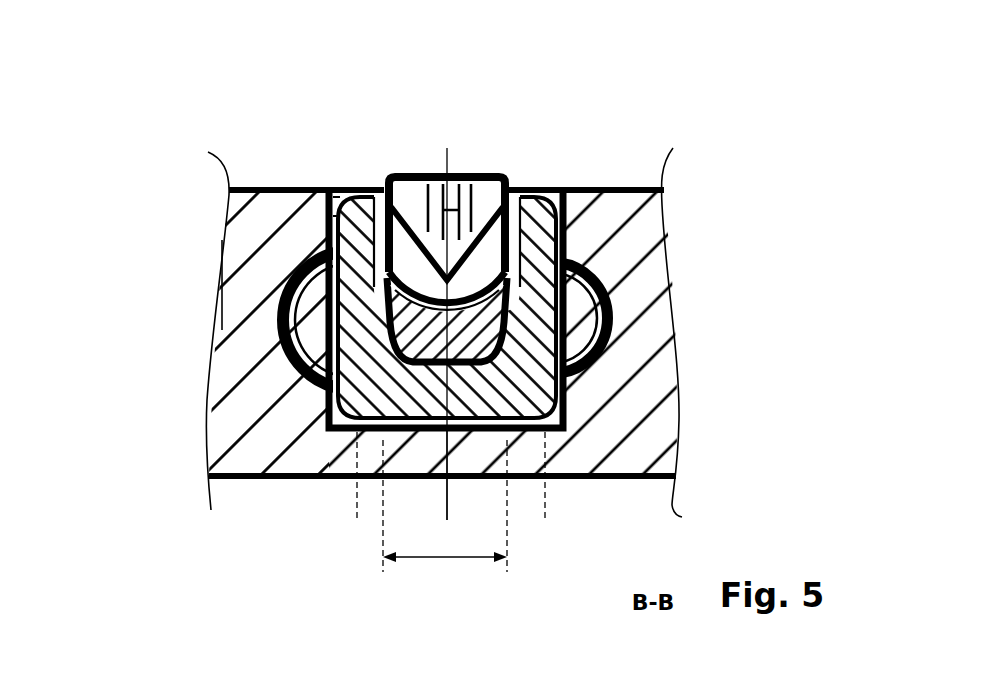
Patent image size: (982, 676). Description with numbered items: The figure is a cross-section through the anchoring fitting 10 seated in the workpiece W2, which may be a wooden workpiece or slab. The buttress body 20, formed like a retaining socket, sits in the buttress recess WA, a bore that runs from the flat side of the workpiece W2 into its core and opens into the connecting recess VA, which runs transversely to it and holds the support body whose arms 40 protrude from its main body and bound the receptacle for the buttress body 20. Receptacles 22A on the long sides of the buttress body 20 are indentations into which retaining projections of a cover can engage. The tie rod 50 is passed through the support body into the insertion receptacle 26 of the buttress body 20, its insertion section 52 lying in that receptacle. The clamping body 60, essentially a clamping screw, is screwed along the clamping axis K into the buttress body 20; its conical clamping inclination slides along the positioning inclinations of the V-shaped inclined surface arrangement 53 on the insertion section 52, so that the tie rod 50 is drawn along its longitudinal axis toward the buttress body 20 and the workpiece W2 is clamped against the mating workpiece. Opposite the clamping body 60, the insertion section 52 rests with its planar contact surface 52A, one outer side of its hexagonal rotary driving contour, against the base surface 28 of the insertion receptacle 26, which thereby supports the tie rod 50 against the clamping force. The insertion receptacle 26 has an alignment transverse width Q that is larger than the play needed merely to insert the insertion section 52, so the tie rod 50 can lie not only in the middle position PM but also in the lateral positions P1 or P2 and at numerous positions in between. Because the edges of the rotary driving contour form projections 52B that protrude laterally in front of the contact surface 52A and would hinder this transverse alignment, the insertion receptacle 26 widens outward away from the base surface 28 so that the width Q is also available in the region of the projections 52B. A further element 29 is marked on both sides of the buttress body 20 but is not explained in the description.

The anchoring fitting 10 is at (329, 187).
The buttress body 20 is at (328, 242).
The receptacles 22A is at (348, 200).
The insertion receptacle 26 is at (575, 258).
The base surface 28 is at (333, 400).
The sealing ring 29 is at (305, 320).
The arms 40 is at (300, 336).
The tie rod 50 is at (566, 283).
The insertion section 52 is at (400, 432).
The contact surface 52A is at (467, 432).
The projections 52B is at (525, 320).
The inclined surface arrangement 53 is at (470, 285).
The clamping body 60 is at (403, 173).
The clamping axis K is at (447, 160).
The buttress recess WA is at (553, 210).
The connecting recess VA is at (566, 388).
The workpiece W2 is at (212, 278).
The lateral position P1 is at (553, 489).
The lateral position P2 is at (350, 493).
The middle position PM is at (456, 490).
The alignment transverse width Q is at (444, 565).